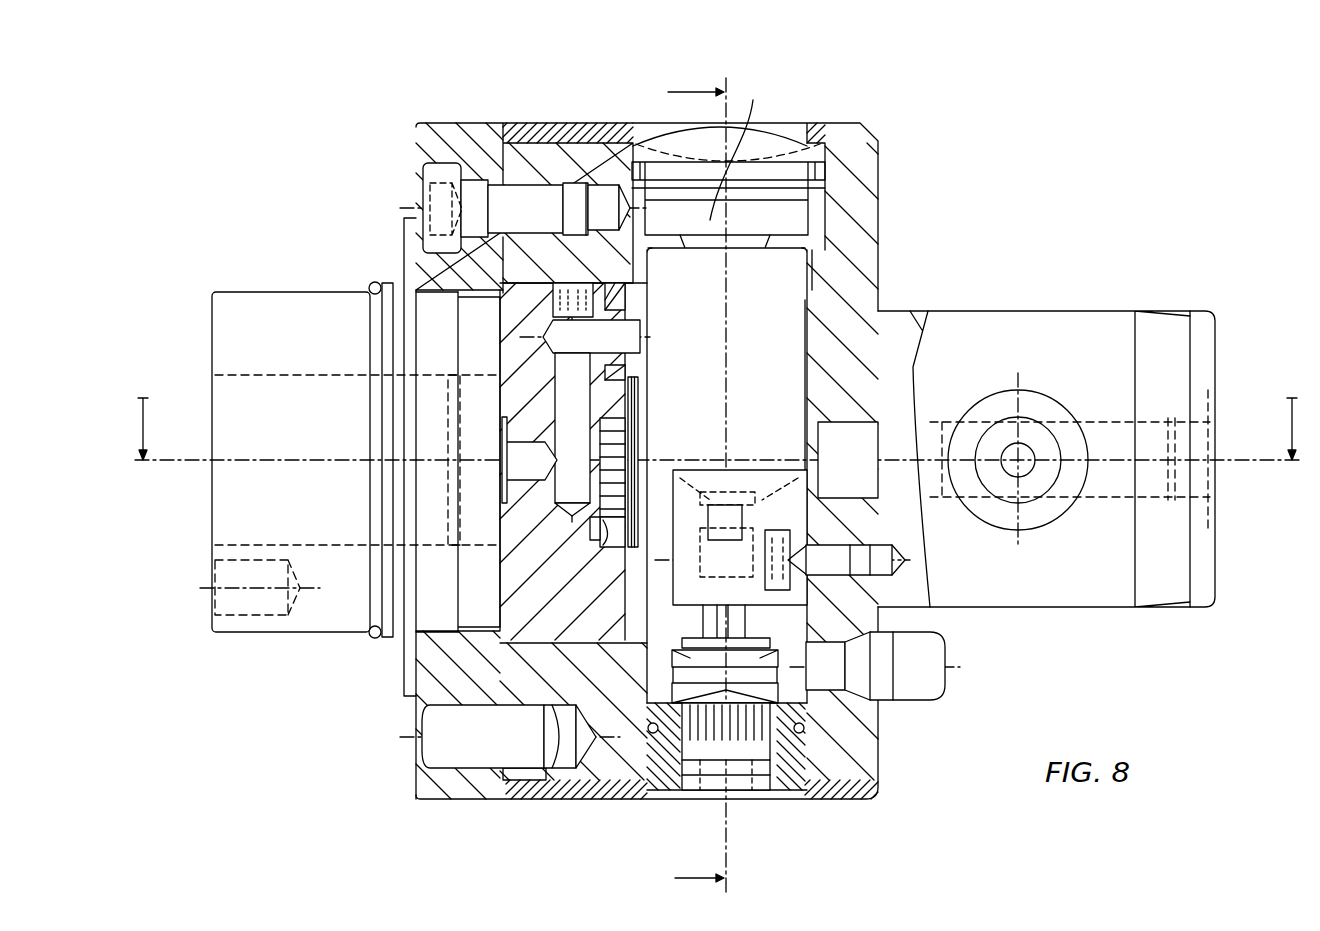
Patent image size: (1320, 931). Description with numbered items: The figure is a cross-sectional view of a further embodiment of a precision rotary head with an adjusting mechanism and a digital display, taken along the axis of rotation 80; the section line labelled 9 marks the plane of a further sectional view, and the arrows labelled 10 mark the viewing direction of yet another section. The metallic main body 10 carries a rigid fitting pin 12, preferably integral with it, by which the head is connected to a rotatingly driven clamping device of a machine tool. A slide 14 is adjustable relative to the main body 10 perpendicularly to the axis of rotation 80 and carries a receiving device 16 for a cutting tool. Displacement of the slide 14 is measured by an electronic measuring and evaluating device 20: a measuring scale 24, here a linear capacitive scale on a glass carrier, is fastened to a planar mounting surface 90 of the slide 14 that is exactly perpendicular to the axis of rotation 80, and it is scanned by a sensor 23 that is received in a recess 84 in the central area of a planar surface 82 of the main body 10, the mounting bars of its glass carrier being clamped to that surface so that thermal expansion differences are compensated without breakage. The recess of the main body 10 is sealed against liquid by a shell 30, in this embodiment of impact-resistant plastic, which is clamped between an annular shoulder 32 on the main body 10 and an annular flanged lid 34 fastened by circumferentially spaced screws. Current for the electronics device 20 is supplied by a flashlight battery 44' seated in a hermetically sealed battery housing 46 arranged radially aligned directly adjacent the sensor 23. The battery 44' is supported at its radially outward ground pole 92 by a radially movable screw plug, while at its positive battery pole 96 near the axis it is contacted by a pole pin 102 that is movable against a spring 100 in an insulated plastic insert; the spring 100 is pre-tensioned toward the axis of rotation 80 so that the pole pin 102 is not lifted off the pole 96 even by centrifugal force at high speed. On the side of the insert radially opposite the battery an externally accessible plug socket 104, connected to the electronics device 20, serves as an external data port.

The section line 9- 9 is at (696, 483).
The main body 10 is at (717, 427).
The fitting pin 12 is at (1065, 325).
The slide 14 is at (528, 598).
The receiving device 16 is at (248, 635).
The electronic measuring and evaluating device 20 is at (608, 545).
The sensor 23 is at (632, 445).
The measuring scale 24 is at (622, 465).
The shell 30 is at (548, 124).
The annular shoulder 32 is at (850, 136).
The annular flanged lid 34 is at (422, 138).
The flashlight battery 44' is at (874, 383).
The battery housing 46 is at (795, 268).
The axis of rotation 80 is at (1225, 463).
The planar surface 82 is at (640, 362).
The recess 84 is at (640, 382).
The planar mounting surface 90 is at (600, 525).
The ground pole 92 is at (735, 255).
The battery pole 96 is at (918, 515).
The spring 100 is at (698, 525).
The pole pin 102 is at (705, 512).
The plug socket 104 is at (745, 790).